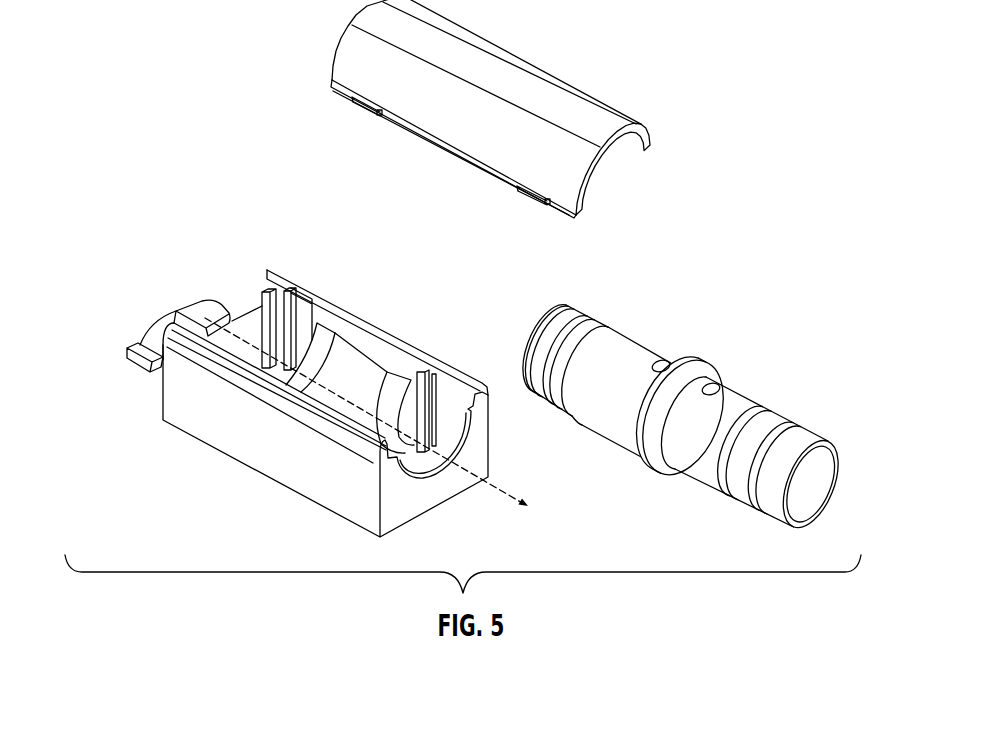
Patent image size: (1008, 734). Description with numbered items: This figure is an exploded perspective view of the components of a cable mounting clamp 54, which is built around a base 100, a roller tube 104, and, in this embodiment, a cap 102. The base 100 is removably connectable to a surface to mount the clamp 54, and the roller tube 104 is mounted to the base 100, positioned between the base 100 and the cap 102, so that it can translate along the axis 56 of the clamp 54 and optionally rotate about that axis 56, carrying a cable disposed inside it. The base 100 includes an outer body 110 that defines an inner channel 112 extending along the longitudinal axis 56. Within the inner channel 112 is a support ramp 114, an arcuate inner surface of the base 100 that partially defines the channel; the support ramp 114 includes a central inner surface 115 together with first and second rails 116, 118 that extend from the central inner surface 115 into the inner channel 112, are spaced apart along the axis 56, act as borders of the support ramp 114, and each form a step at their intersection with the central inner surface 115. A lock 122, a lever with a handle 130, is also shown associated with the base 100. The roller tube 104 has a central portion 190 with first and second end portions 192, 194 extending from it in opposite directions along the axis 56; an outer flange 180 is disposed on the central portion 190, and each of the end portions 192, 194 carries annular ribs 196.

The cable mounting clamp 54 is at (150, 180).
The axis 56 is at (184, 301).
The base 100 is at (200, 469).
The cap 102 is at (557, 82).
The roller tube 104 is at (726, 336).
The outer body 110 is at (305, 474).
The inner channel 112 is at (347, 354).
The support ramp 114 is at (382, 378).
The central inner surface 115 is at (366, 361).
The first rail 116 is at (313, 333).
The second rail 118 is at (404, 400).
The lock 122 is at (136, 376).
The handle 130 is at (137, 348).
The outer flange 180 is at (699, 362).
The central portion 190 is at (618, 419).
The first end portion 192 is at (573, 394).
The second end portion 194 is at (747, 484).
The ribs 196 is at (592, 317).